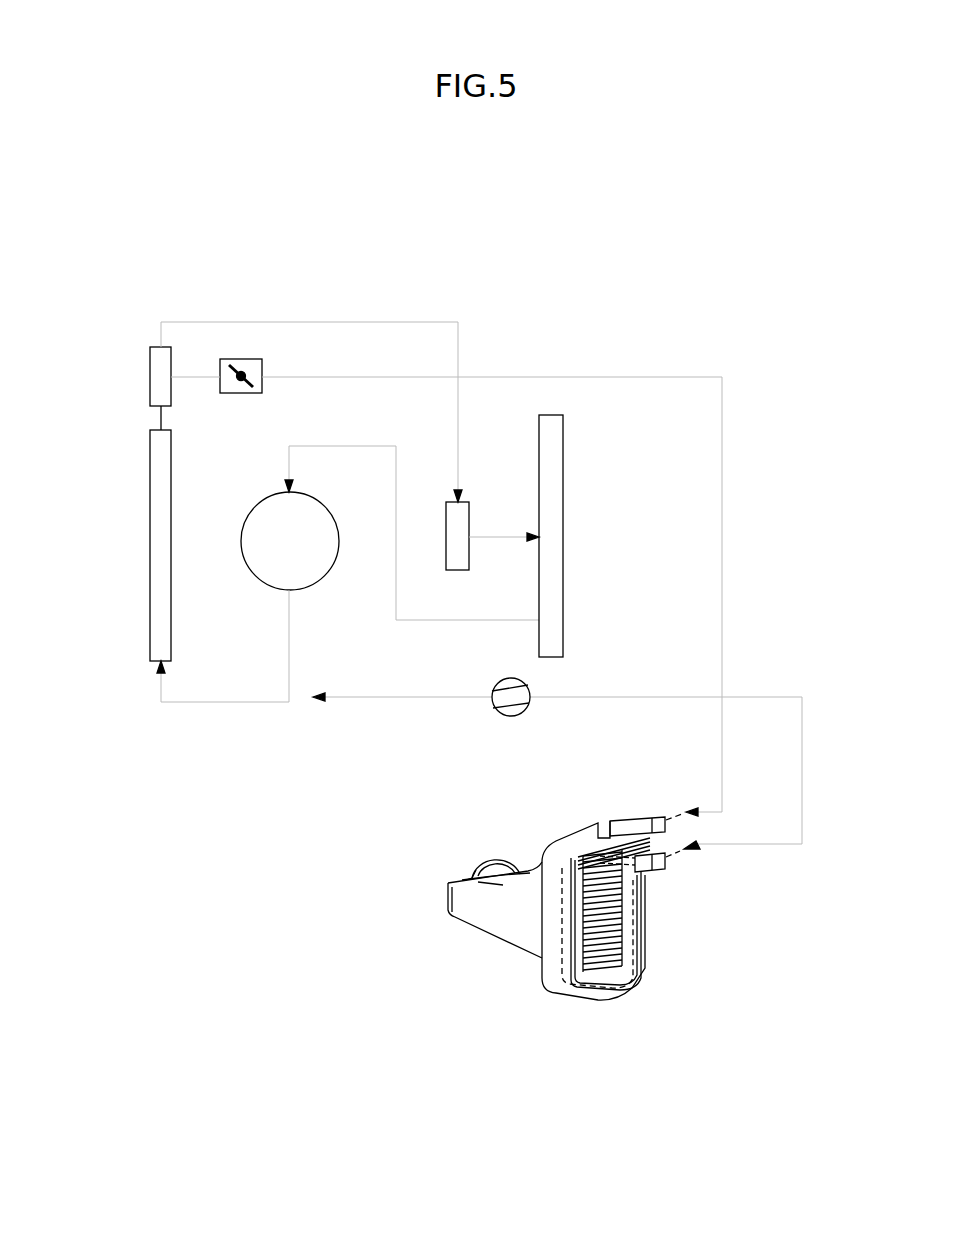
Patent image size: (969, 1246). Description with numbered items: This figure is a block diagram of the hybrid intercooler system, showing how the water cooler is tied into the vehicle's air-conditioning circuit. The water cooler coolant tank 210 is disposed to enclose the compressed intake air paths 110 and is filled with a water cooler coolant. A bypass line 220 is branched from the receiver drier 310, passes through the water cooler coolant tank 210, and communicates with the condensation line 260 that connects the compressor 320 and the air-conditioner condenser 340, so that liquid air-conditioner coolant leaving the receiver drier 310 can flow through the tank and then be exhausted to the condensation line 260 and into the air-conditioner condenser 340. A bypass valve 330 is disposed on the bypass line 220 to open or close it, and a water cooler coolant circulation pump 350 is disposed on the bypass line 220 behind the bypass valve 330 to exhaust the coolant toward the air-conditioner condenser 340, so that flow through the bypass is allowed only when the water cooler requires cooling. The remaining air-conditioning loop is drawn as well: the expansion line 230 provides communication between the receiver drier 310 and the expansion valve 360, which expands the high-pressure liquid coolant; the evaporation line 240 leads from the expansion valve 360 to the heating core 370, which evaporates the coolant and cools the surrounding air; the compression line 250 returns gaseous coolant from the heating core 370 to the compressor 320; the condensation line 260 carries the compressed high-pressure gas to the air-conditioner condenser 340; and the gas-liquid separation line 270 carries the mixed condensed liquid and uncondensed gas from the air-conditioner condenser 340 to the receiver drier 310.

The compressed intake air paths 110 is at (603, 920).
The water cooler coolant tank 210 is at (548, 982).
The bypass line 220 is at (566, 617).
The expansion line 230 is at (308, 322).
The evaporation line 240 is at (506, 537).
The compression line 250 is at (396, 536).
The condensation line 260 is at (224, 702).
The gas-liquid separation line 270 is at (162, 416).
The receiver drier 310 is at (157, 370).
The compressor 320 is at (259, 568).
The bypass valve 330 is at (240, 364).
The air-conditioner condenser 340 is at (172, 459).
The water cooler coolant circulation pump 350 is at (510, 709).
The expansion valve 360 is at (469, 502).
The heating core 370 is at (562, 535).